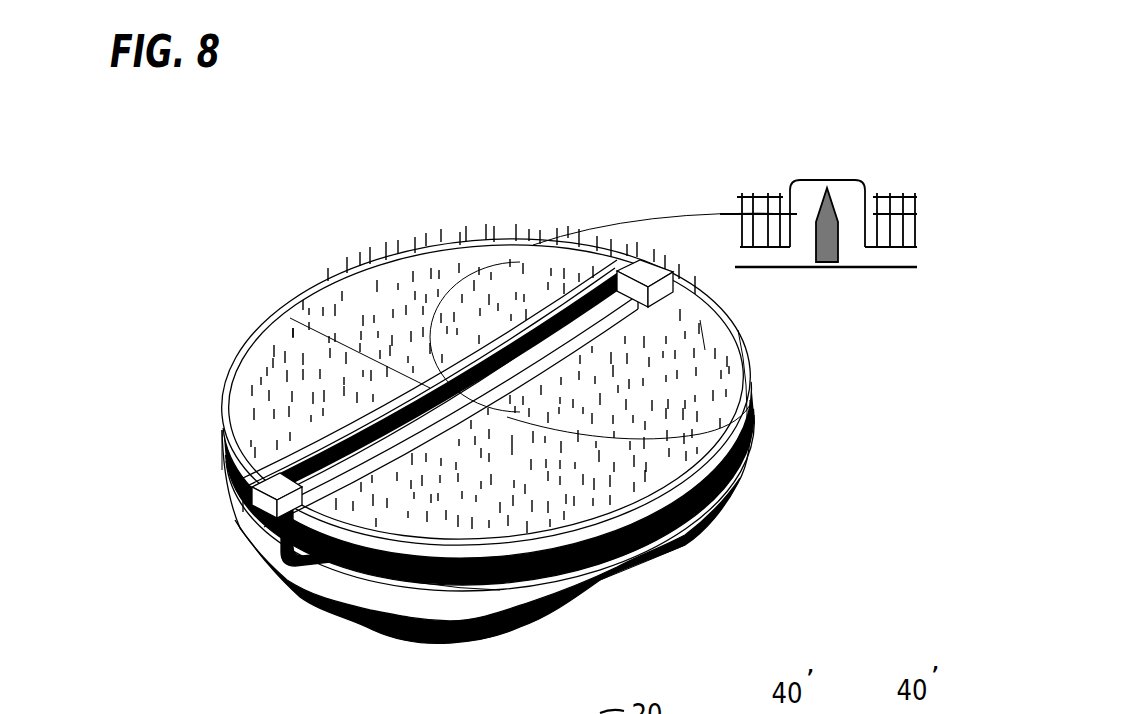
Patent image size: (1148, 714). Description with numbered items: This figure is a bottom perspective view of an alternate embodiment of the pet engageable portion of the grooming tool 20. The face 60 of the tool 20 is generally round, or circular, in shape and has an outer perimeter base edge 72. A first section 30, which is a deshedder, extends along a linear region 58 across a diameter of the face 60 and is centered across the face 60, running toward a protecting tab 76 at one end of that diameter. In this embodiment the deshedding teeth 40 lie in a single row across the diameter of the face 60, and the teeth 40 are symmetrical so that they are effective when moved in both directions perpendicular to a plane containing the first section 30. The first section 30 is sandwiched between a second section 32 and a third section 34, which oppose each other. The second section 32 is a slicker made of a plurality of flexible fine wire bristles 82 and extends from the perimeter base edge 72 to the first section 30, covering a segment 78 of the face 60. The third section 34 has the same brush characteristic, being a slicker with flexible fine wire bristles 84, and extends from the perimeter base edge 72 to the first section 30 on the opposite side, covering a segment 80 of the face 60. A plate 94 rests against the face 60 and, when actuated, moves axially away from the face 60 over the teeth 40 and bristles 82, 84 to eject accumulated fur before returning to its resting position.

The pet grooming tool 20 is at (548, 125).
The second section 32 is at (355, 288).
The face 60 is at (430, 265).
The linear region 58 is at (350, 477).
The first section 30 is at (316, 492).
The protecting tab 76 is at (282, 492).
The segment 78 is at (237, 436).
The flexible fine wire bristles 82 is at (303, 300).
The segment 80 is at (407, 533).
The plate 94 is at (717, 328).
The flexible fine wire bristles 84 is at (720, 357).
The third section 34 is at (710, 433).
The outer perimeter base edge 72 is at (678, 543).
The teeth 40 is at (821, 213).